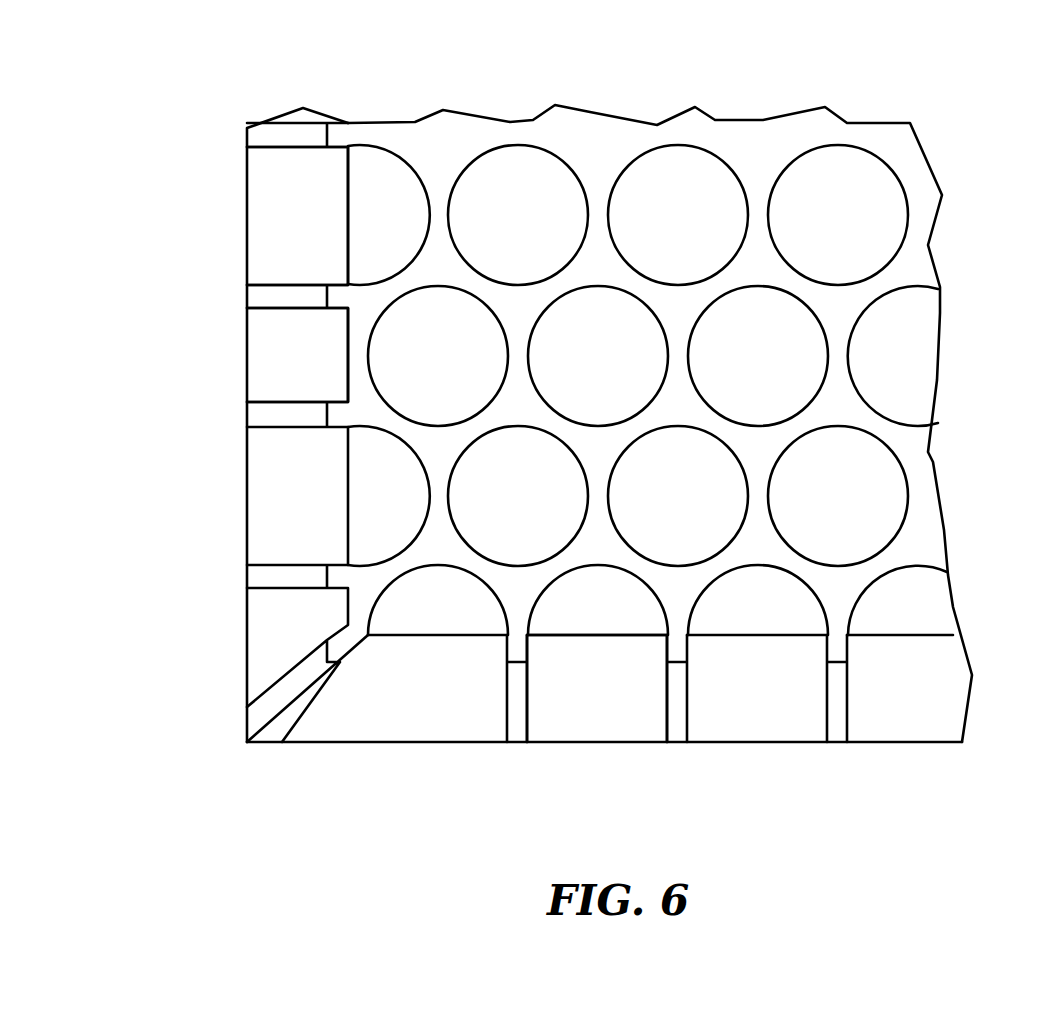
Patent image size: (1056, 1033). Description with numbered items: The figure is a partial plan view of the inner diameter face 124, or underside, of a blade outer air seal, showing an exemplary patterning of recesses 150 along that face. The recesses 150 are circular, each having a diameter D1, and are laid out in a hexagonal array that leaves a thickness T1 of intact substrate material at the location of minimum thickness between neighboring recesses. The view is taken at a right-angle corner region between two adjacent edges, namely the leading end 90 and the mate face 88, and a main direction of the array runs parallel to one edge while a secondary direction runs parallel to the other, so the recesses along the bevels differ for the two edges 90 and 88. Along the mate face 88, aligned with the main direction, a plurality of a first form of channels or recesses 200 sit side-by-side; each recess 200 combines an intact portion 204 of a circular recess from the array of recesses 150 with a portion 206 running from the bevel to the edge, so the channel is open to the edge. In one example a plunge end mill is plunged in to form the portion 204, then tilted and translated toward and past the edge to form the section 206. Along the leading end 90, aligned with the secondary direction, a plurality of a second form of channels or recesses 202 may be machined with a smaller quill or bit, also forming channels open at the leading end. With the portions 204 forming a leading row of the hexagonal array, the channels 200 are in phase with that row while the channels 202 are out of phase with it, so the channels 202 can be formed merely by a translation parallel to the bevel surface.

The mate face 88 is at (645, 747).
The leading end 90 is at (238, 503).
The ID face 124 is at (760, 150).
The recesses 150 is at (858, 492).
The recesses (first form of channels) 200 is at (285, 227).
The recesses (second form of channels) 202 is at (285, 362).
The intact portion 204 is at (905, 610).
The portion from bevel to edge 206 is at (915, 700).
The thickness T1 is at (612, 328).
The diameter D1 is at (748, 287).